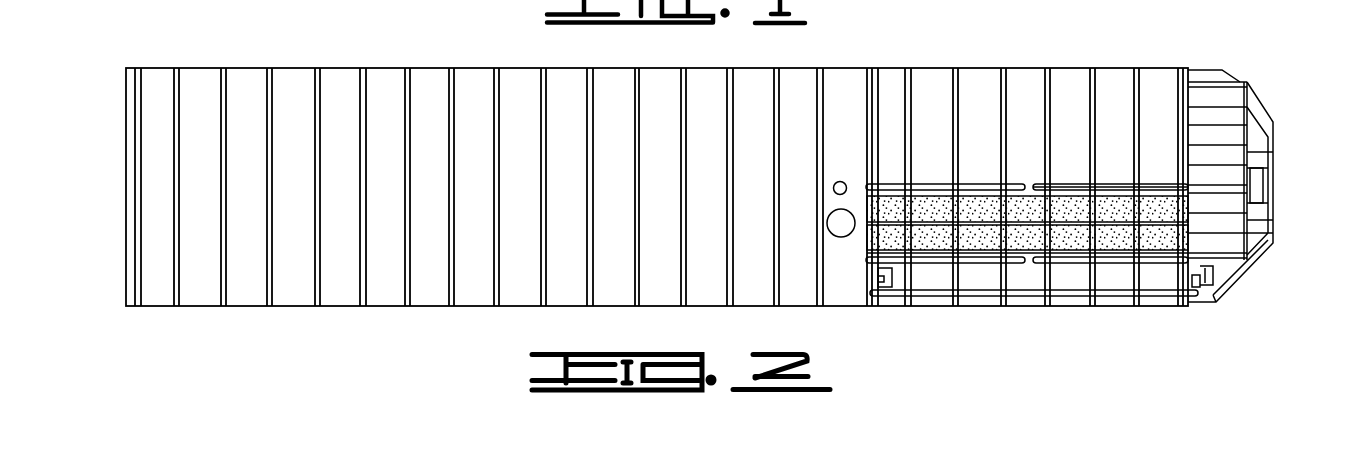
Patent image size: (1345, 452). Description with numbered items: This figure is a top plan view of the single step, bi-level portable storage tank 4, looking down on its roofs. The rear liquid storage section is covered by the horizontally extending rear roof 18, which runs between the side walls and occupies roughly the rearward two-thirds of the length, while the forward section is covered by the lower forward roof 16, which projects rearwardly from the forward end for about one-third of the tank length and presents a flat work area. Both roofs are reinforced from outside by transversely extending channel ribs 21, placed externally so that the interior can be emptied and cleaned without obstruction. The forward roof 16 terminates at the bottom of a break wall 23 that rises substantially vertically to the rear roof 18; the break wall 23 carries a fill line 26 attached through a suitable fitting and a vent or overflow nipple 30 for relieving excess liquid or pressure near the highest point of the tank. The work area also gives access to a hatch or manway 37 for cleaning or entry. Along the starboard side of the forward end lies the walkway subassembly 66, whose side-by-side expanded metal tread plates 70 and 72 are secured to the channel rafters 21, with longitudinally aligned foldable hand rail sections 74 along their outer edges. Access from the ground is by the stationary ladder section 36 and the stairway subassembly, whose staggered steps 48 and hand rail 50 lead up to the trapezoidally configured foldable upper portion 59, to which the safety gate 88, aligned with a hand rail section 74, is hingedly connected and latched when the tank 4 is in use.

The portable storage tank 4 is at (304, 312).
The forward roof 16 is at (934, 80).
The rear roof 18 is at (288, 102).
The channel ribs 21 is at (494, 292).
The break wall 23 is at (872, 90).
The fill line 26 is at (1027, 294).
The vent or overflow nipple 30 is at (880, 272).
The ladder section 36 is at (1238, 72).
The hatch or manway 37 is at (832, 235).
The steps 48 is at (1223, 127).
The hand rail 50 is at (1245, 138).
The foldable upper portion 59 is at (1233, 213).
The walkway subassembly 66 is at (1067, 184).
The tread plate 70 is at (868, 206).
The tread plate 72 is at (877, 235).
The hand rail sections 74 is at (935, 186).
The safety gate 88 is at (1223, 302).